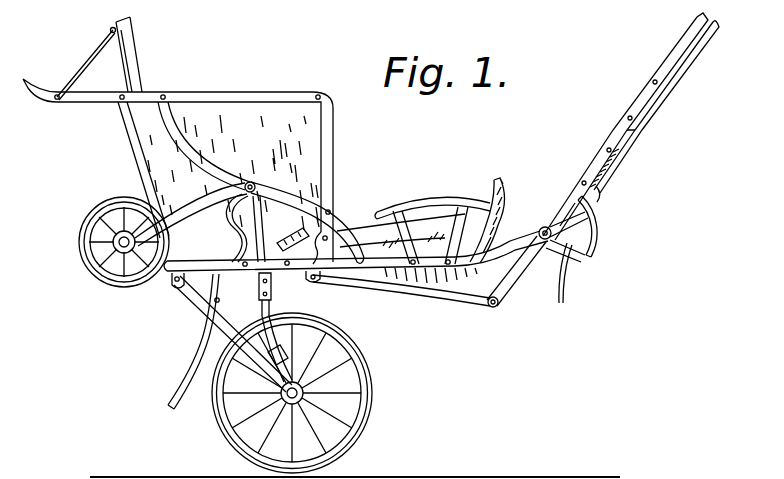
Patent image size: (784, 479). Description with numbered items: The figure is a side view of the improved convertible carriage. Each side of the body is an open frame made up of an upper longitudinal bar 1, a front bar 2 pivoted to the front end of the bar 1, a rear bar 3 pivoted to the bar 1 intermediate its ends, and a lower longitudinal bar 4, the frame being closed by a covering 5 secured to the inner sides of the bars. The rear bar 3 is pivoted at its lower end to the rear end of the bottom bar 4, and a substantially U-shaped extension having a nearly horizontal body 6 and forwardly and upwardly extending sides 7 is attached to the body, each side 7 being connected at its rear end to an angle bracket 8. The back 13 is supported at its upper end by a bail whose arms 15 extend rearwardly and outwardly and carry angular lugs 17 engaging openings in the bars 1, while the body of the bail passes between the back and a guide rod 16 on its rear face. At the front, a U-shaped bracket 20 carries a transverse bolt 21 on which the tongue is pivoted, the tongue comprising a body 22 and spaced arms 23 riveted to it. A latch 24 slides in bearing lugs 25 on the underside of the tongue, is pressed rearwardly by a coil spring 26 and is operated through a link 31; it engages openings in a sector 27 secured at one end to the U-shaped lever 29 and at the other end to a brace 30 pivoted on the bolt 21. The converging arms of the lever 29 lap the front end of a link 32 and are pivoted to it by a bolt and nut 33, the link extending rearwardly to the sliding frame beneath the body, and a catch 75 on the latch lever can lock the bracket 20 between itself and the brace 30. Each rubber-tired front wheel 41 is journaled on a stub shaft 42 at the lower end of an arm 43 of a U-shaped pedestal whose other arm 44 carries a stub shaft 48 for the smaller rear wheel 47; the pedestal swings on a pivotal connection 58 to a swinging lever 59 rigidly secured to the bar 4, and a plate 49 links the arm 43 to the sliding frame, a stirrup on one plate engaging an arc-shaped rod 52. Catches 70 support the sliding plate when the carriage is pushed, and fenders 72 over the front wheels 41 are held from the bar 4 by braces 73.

The upper longitudinal bar 1 is at (228, 102).
The front bar 2 is at (335, 149).
The rear bar 3 is at (133, 152).
The lower longitudinal bar 4 is at (373, 268).
The covering 5 is at (293, 118).
The body of U-shaped bar 6 is at (502, 183).
The side bars 7 is at (362, 227).
The angle bracket 8 is at (435, 255).
The back 13 is at (133, 46).
The bail arms 15 is at (101, 50).
The guide rod 16 is at (122, 75).
The angular lug 17 is at (57, 103).
The U-shaped bracket 20 is at (528, 245).
The bolt 21 is at (545, 227).
The tongue body 22 is at (692, 38).
The tongue arms 23 is at (566, 195).
The latch 24 is at (590, 201).
The bearing lugs 25 is at (618, 172).
The coil spring 26 is at (612, 186).
The sector 27 is at (596, 232).
The U-shaped lever 29 is at (521, 265).
The brace 30 is at (570, 270).
The link 31 is at (700, 63).
The link 32 is at (476, 296).
The bolt and nut 33 is at (495, 309).
The front wheels 41 is at (374, 405).
The stub shaft 42 is at (281, 395).
The pedestal arm 43 is at (270, 308).
The pedestal arm 44 is at (142, 182).
The rear wheels 47 is at (115, 284).
The stub shafts 48 is at (108, 255).
The plate 49 is at (234, 309).
The arc-shaped rod 52 is at (196, 364).
The pivotal connection 58 is at (251, 183).
The swinging lever 59 is at (243, 230).
The catches 70 is at (175, 288).
The fenders 72 is at (441, 198).
The braces 73 is at (403, 208).
The catch 75 is at (592, 252).